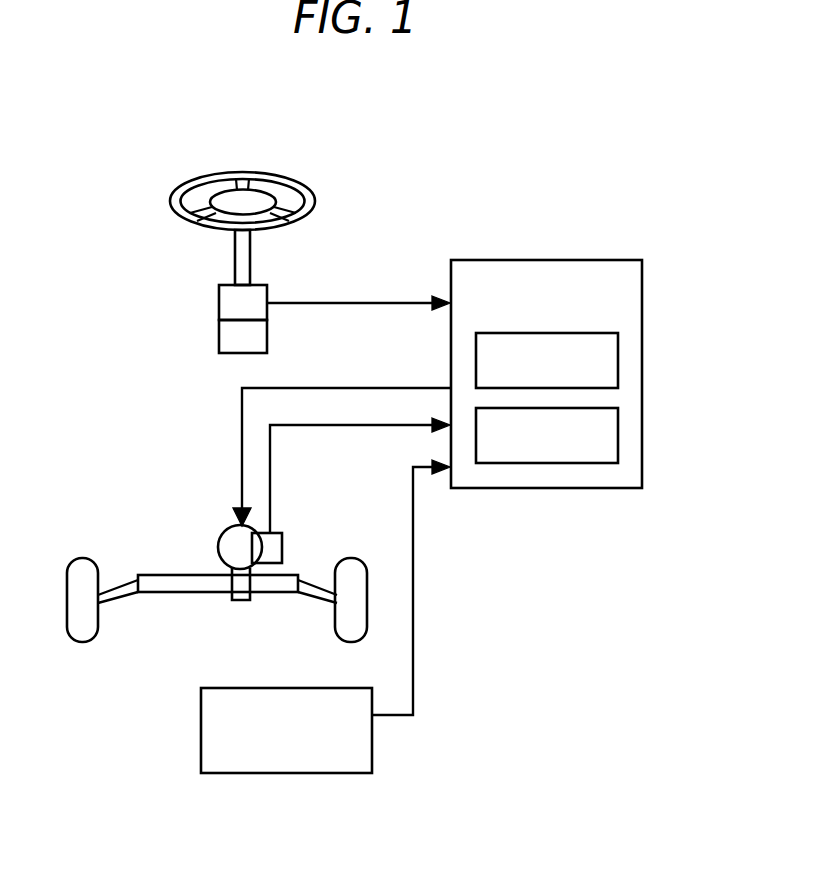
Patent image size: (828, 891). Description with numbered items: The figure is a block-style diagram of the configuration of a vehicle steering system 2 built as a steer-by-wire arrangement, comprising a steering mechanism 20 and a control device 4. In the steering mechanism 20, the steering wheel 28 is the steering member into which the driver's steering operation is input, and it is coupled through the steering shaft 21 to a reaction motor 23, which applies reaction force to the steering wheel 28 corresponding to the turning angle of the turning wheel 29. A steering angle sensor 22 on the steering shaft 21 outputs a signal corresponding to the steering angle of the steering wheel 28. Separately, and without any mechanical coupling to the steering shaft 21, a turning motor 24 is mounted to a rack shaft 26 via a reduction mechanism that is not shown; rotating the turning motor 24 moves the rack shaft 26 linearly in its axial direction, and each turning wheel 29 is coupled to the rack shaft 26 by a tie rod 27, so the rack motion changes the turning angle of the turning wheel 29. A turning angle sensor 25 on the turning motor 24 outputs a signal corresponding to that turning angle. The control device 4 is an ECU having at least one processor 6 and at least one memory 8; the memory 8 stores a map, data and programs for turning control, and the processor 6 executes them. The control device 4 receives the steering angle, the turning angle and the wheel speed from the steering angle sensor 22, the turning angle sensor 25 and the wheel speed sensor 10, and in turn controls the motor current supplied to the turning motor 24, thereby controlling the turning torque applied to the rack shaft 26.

The vehicle steering system 2 is at (434, 196).
The control device 4 is at (565, 260).
The processor 6 is at (618, 363).
The memory 8 is at (618, 440).
The wheel speed sensor 10 is at (201, 715).
The steering mechanism 20 is at (108, 299).
The steering shaft 21 is at (235, 254).
The steering angle sensor 22 is at (219, 298).
The reaction motor 23 is at (219, 330).
The turning motor 24 is at (222, 532).
The turning angle sensor 25 is at (278, 533).
The rack shaft 26 is at (155, 575).
The tie rod 27 is at (126, 598).
The steering wheel 28 is at (222, 174).
The turning wheel 29 is at (80, 557).